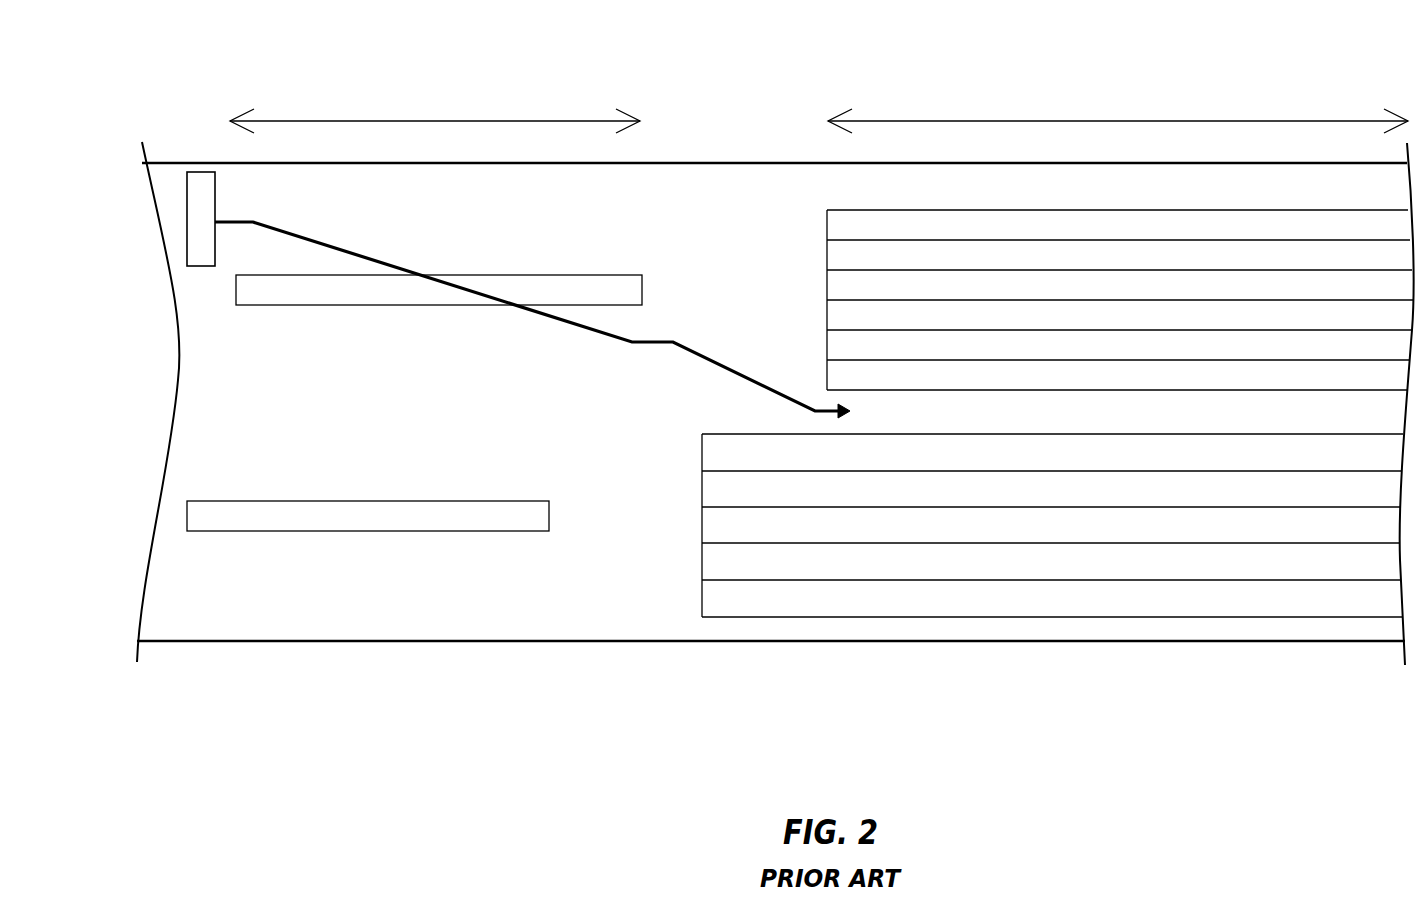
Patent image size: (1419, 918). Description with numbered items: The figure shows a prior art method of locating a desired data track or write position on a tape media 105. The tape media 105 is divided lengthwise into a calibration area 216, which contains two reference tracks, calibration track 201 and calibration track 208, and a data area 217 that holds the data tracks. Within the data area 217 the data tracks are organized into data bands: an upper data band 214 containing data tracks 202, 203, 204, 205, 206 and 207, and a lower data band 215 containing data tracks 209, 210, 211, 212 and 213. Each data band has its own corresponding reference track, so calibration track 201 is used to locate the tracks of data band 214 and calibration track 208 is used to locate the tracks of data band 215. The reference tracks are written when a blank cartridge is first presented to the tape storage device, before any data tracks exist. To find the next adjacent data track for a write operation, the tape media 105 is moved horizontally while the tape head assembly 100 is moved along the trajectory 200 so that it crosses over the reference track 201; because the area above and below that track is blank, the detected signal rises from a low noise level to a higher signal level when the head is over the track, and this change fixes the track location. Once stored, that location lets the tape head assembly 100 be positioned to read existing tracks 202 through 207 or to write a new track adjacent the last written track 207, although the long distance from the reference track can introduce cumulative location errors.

The tape head assembly 100 is at (185, 253).
The tape media 105 is at (892, 641).
The trajectory 200 is at (304, 236).
The calibration track 201 is at (308, 297).
The data track 202 is at (908, 235).
The data track 203 is at (958, 265).
The data track 204 is at (1008, 295).
The data track 205 is at (1056, 325).
The data track 206 is at (1105, 355).
The data track 207 is at (1155, 385).
The calibration track 208 is at (255, 518).
The data track 209 is at (785, 466).
The data track 210 is at (785, 502).
The data track 211 is at (785, 539).
The data track 212 is at (785, 574).
The data track 213 is at (1052, 602).
The data band 214 is at (1082, 300).
The data band 215 is at (1010, 526).
The calibration area 216 is at (526, 102).
The data area 217 is at (1142, 94).